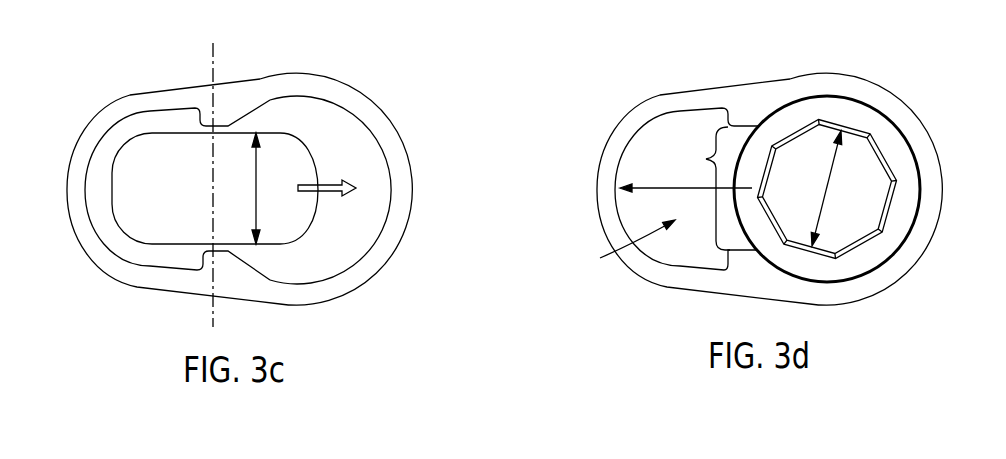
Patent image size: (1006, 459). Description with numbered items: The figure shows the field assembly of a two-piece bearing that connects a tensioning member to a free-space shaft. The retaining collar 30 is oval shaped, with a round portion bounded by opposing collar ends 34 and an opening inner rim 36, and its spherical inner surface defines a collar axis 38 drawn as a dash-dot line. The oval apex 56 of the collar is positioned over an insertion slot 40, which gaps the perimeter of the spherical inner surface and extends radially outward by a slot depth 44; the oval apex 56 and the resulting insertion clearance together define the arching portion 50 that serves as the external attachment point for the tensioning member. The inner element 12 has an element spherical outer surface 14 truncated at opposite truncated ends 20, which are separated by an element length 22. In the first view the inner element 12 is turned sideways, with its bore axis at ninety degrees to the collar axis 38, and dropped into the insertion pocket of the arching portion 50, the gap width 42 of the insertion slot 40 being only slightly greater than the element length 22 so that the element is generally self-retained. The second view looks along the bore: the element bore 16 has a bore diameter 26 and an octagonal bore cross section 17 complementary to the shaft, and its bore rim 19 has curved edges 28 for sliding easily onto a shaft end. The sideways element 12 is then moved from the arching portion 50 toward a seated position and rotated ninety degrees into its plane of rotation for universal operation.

In FIG. 3C, the inner element 12 is at (132, 230).
In FIG. 3D, the inner element 12 is at (788, 262).
In FIG. 3C, the element spherical outer surface 14 is at (125, 196).
In FIG. 3D, the element bore 16 is at (798, 153).
In FIG. 3D, the bore cross section 17 is at (897, 167).
In FIG. 3D, the bore rim 19 is at (893, 210).
In FIG. 3C, the truncated ends 20 is at (170, 133).
In FIG. 3D, the truncated ends 20 is at (880, 143).
In FIG. 3C, the element length 22 is at (256, 168).
In FIG. 3D, the bore diameter 26 is at (828, 157).
In FIG. 3D, the curved edges 28 is at (893, 195).
In FIG. 3C, the retaining collar 30 is at (250, 78).
In FIG. 3D, the retaining collar 30 is at (798, 73).
In FIG. 3C, the collar ends 34 is at (277, 80).
In FIG. 3D, the collar ends 34 is at (820, 82).
In FIG. 3C, the opening inner rim 36 is at (313, 97).
In FIG. 3D, the opening inner rim 36 is at (855, 98).
In FIG. 3C, the collar axis 38 is at (212, 68).
In FIG. 3D, the insertion slot 40 is at (627, 245).
In FIG. 3D, the gap width 42 is at (705, 160).
In FIG. 3D, the slot depth 44 is at (632, 148).
In FIG. 3C, the arching portion 50 is at (92, 140).
In FIG. 3D, the arching portion 50 is at (600, 160).
In FIG. 3C, the oval apex 56 is at (68, 178).
In FIG. 3D, the oval apex 56 is at (598, 188).